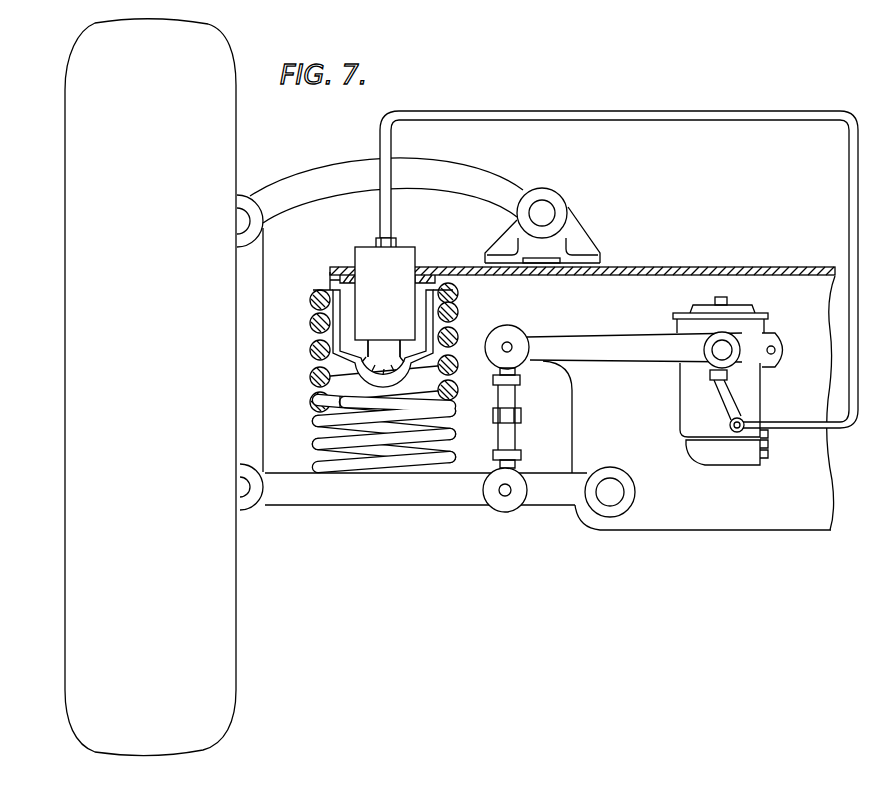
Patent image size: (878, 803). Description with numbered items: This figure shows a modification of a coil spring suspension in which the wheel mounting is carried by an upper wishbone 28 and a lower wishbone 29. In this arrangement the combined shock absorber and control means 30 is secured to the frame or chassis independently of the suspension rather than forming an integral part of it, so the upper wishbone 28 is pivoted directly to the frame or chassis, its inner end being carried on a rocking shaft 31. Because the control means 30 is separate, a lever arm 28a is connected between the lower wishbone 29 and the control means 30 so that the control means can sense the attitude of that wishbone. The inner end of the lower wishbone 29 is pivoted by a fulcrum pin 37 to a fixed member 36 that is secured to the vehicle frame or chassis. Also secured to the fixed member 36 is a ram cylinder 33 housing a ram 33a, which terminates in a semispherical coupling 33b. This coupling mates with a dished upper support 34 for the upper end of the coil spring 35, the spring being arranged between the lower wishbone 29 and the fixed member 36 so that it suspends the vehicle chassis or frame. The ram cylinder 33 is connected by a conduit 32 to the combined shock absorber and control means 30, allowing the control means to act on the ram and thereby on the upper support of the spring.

The upper wishbone 28 is at (330, 181).
The lever arm 28a is at (580, 393).
The lower wishbone 29 is at (385, 490).
The combined shock absorber and control means 30 is at (695, 408).
The rocking shaft 31 is at (548, 213).
The conduit 32 is at (471, 120).
The ram cylinder 33 is at (377, 260).
The ram 33a is at (386, 348).
The semispherical coupling 33b is at (415, 368).
The dished upper support 34 is at (456, 343).
The coil spring 35 is at (450, 472).
The fixed member 36 is at (740, 514).
The fulcrum pin 37 is at (611, 493).